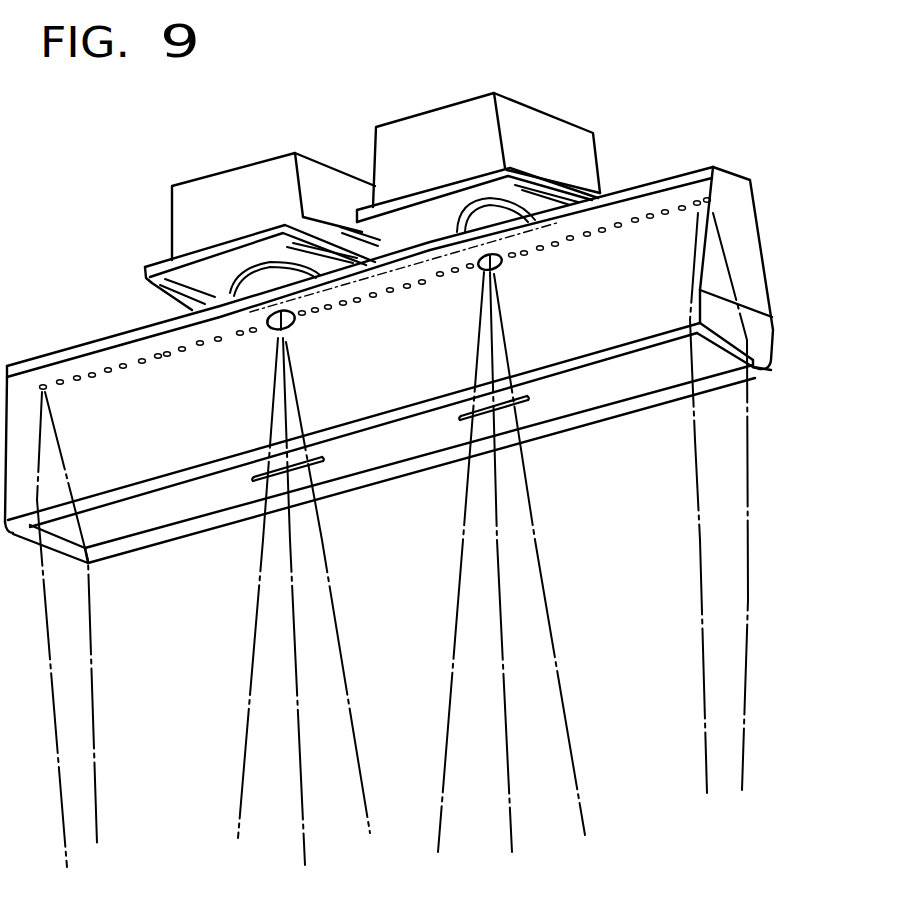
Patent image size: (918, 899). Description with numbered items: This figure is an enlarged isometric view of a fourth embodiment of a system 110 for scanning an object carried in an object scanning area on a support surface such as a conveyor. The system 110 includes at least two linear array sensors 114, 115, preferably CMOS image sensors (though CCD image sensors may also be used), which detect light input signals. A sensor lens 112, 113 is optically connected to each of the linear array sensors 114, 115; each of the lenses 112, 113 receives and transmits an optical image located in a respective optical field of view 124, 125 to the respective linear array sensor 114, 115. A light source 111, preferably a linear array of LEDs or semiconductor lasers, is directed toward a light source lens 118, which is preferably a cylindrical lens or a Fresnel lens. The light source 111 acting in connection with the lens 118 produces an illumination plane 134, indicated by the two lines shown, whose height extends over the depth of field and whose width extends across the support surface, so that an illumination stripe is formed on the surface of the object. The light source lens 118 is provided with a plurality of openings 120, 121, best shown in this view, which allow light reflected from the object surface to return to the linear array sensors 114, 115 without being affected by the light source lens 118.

The system 110 is at (633, 102).
The light source 111 is at (622, 222).
The sensor lens 112 is at (263, 320).
The sensor lens 113 is at (503, 265).
The linear array sensor 114 is at (247, 163).
The linear array sensor 115 is at (527, 115).
The light source lens 118 is at (640, 386).
The opening 120 is at (323, 460).
The opening 121 is at (528, 398).
The optical field of view 124 is at (252, 660).
The optical field of view 125 is at (553, 649).
The illumination plane 134 is at (738, 658).